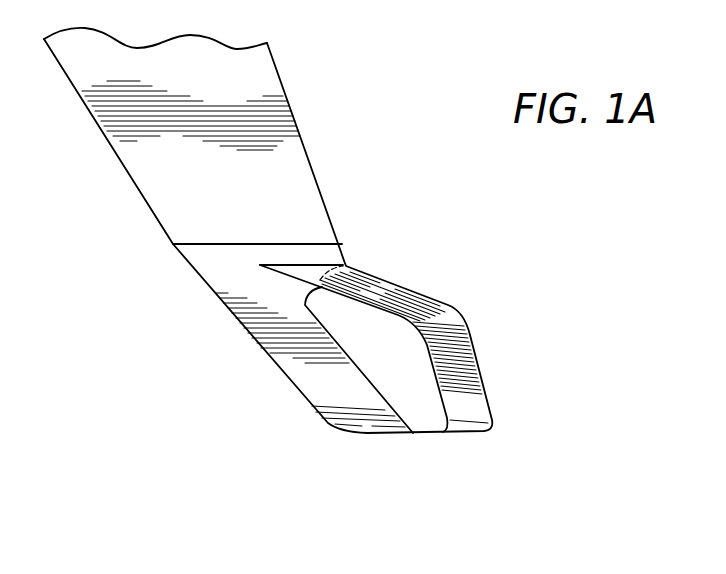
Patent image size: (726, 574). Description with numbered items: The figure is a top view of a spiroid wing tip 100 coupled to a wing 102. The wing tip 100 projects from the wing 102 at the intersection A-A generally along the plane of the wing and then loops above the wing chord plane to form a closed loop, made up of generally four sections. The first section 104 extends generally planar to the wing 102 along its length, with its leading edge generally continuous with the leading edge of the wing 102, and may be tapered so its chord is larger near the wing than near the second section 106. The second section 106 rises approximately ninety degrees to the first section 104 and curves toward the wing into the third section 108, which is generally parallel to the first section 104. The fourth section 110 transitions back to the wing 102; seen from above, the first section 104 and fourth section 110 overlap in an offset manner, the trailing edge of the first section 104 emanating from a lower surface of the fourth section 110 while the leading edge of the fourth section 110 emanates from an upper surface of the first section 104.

The spiroid wing tip 100 is at (516, 286).
The wing 102 is at (325, 108).
The first section 104 is at (308, 438).
The second section 106 is at (472, 443).
The third section 108 is at (505, 317).
The fourth section 110 is at (461, 290).